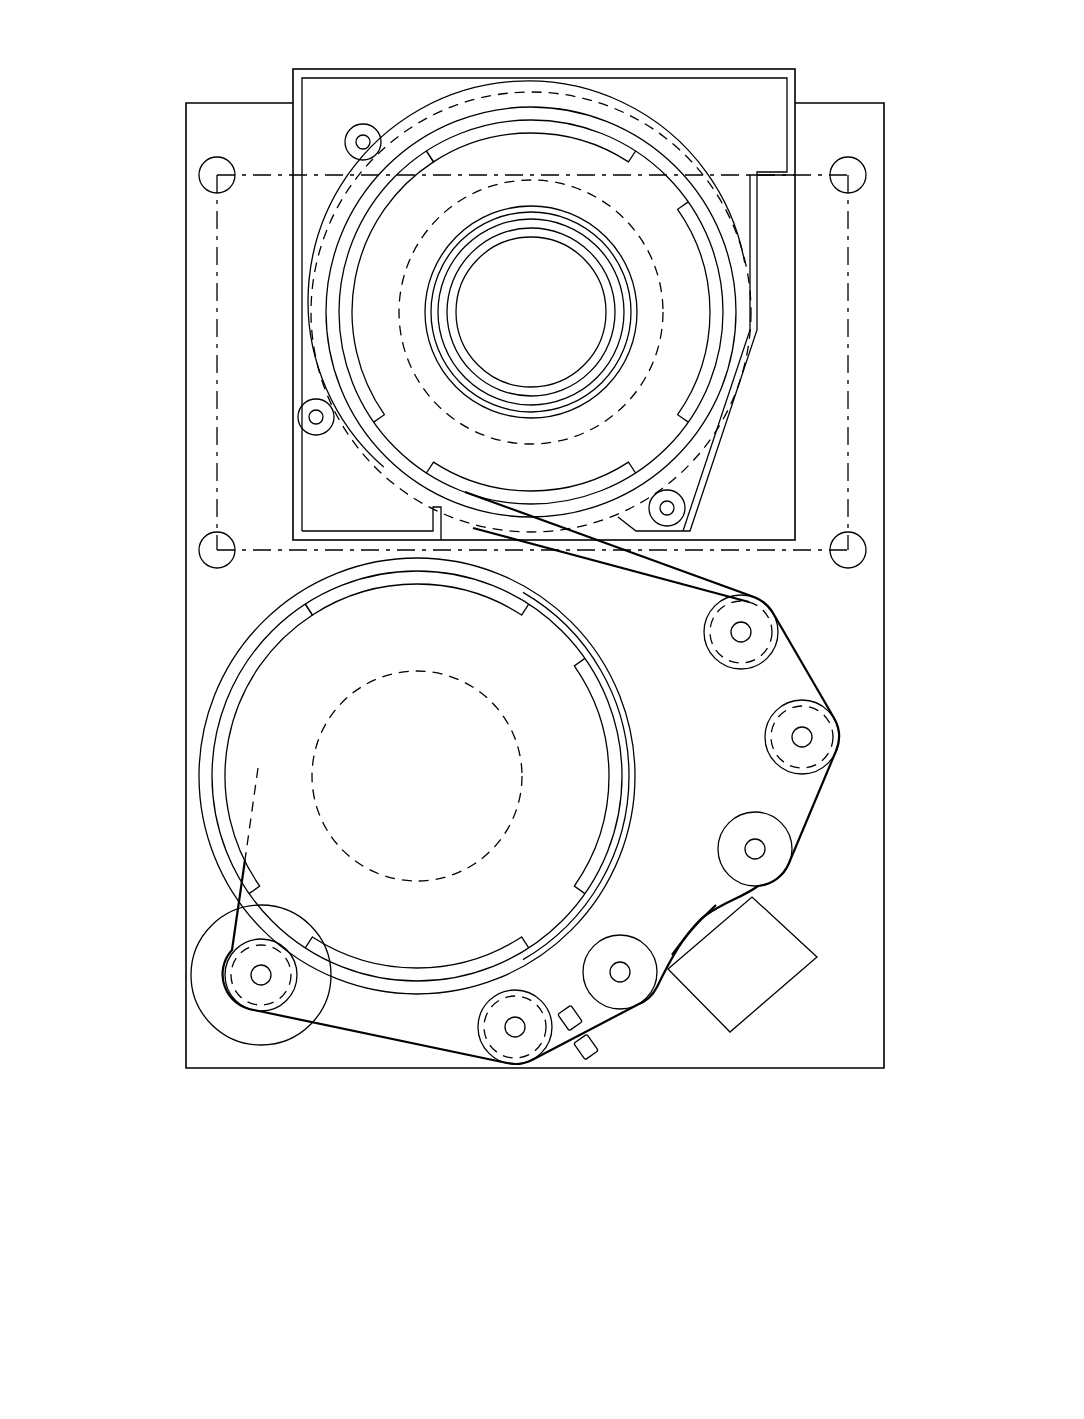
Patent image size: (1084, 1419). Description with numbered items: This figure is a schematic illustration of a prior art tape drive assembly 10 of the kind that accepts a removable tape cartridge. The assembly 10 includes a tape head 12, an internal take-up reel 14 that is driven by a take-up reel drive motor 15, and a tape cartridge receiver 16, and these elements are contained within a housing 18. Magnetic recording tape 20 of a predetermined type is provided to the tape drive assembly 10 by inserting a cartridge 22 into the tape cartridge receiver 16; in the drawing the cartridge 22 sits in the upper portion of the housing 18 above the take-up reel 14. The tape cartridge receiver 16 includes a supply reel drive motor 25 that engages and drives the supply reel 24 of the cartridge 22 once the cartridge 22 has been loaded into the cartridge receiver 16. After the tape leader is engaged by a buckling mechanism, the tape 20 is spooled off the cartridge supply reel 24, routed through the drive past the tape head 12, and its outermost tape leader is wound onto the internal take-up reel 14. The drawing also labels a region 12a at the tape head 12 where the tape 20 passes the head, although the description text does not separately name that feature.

The tape drive assembly 10 is at (253, 1108).
The tape head 12 is at (805, 942).
The head tape-contact face 12a is at (700, 920).
The internal take-up reel 14 is at (255, 667).
The take-up reel drive motor 15 is at (318, 732).
The tape cartridge receiver 16 is at (227, 428).
The housing 18 is at (197, 512).
The magnetic recording tape 20 is at (807, 677).
The cartridge 22 is at (292, 87).
The supply reel 24 is at (362, 297).
The supply reel drive motor 25 is at (438, 219).